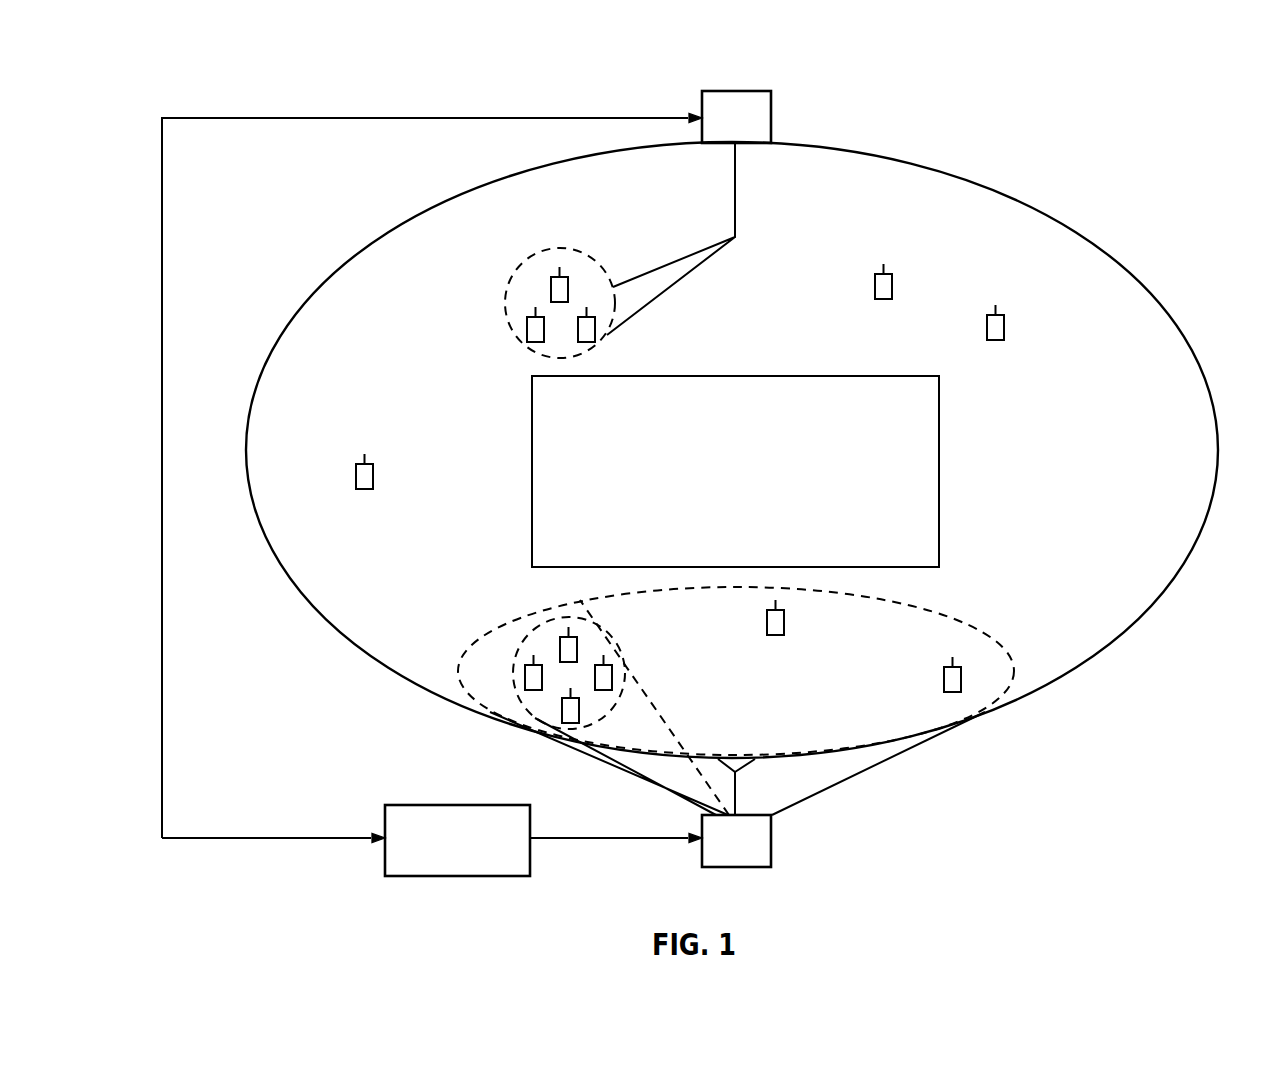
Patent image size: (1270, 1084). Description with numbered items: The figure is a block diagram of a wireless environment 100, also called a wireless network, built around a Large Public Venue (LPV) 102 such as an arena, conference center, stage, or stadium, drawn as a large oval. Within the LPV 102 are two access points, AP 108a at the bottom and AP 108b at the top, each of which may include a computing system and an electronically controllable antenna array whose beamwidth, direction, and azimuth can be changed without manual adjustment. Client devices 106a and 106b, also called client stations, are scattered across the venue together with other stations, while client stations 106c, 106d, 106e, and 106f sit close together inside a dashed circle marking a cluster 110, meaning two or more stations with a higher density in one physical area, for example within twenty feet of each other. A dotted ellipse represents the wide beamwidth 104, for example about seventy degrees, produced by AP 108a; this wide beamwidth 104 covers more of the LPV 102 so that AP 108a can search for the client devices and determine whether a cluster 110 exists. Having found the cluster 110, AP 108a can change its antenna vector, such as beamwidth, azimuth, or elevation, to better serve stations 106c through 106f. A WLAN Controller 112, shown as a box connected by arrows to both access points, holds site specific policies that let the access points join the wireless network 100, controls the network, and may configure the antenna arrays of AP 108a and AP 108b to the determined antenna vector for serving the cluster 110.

The wireless environment 100 is at (1150, 74).
The Large Public Venue 102 is at (1140, 257).
The wide beamwidth 104 is at (956, 604).
The client device 106a is at (962, 680).
The client device 106b is at (784, 622).
The client station 106c is at (565, 633).
The client station 106d is at (523, 678).
The client station 106e is at (613, 680).
The client station 106f is at (561, 708).
The access point 108a is at (771, 840).
The access point 108b is at (771, 118).
The cluster 110 is at (519, 614).
The WLAN Controller 112 is at (457, 805).